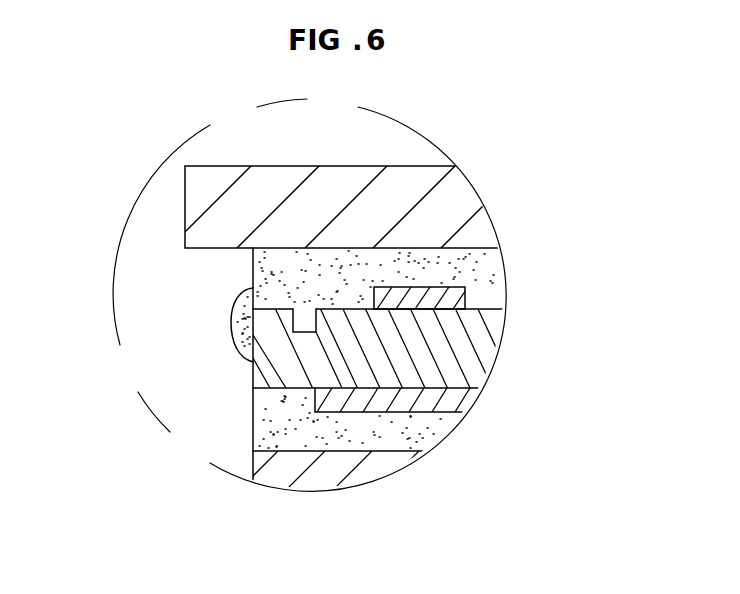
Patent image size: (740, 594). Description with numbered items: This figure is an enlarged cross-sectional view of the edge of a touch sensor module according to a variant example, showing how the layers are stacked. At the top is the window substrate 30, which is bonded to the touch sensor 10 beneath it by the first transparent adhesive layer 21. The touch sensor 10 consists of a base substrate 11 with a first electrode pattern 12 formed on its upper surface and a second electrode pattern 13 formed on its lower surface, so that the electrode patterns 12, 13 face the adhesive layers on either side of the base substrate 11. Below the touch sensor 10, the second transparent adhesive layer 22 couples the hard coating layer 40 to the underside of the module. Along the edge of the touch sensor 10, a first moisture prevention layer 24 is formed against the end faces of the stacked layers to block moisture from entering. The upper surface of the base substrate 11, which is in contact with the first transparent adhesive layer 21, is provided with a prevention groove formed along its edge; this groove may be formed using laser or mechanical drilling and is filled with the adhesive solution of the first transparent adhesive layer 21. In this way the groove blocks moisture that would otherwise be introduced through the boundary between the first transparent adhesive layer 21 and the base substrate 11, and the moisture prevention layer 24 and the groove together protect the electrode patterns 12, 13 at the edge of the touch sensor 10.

The touch sensor 10 is at (432, 351).
The base substrate 11 is at (475, 350).
The first electrode pattern 12 is at (449, 298).
The second electrode pattern 13 is at (437, 402).
The first transparent adhesive layer 21 is at (478, 266).
The second transparent adhesive layer 22 is at (422, 432).
The first moisture prevention layer 24 is at (232, 305).
The window substrate 30 is at (445, 213).
The hard coating layer 40 is at (318, 477).